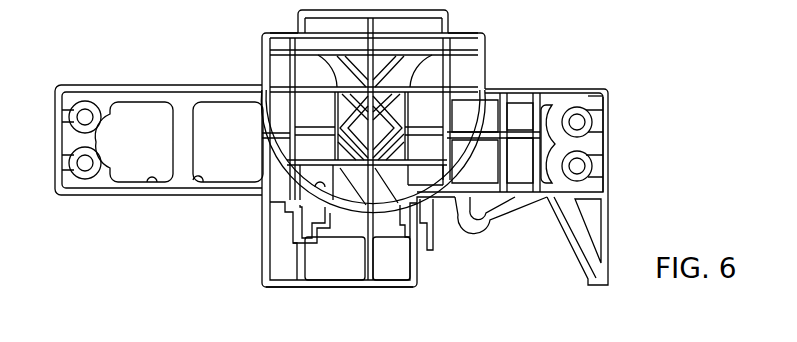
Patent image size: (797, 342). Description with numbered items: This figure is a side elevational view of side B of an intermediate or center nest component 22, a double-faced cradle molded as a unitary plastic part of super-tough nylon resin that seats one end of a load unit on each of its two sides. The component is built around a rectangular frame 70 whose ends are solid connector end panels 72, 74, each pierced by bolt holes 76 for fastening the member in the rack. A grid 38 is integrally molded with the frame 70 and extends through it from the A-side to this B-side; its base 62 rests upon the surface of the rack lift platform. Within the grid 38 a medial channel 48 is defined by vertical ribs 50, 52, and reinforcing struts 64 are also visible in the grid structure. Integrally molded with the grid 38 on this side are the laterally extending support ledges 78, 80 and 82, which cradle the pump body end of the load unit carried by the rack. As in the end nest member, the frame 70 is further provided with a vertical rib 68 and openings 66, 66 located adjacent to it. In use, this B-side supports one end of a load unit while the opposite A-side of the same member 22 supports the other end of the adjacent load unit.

The center nest component 22 is at (504, 80).
The grid 38 is at (455, 24).
The medial channel 48 is at (388, 232).
The vertical rib 50 is at (336, 100).
The vertical rib 52 is at (406, 148).
The base 62 is at (367, 289).
The reinforcing struts 64 is at (352, 151).
The openings 66 is at (190, 178).
The vertical rib 68 is at (182, 140).
The rectangular frame 70 is at (128, 82).
The connector end panel 72 is at (63, 139).
The connector end panel 74 is at (597, 145).
The bolt holes 76 is at (80, 117).
The support ledge 78 is at (262, 102).
The support ledge 80 is at (453, 162).
The support ledge 82 is at (325, 235).